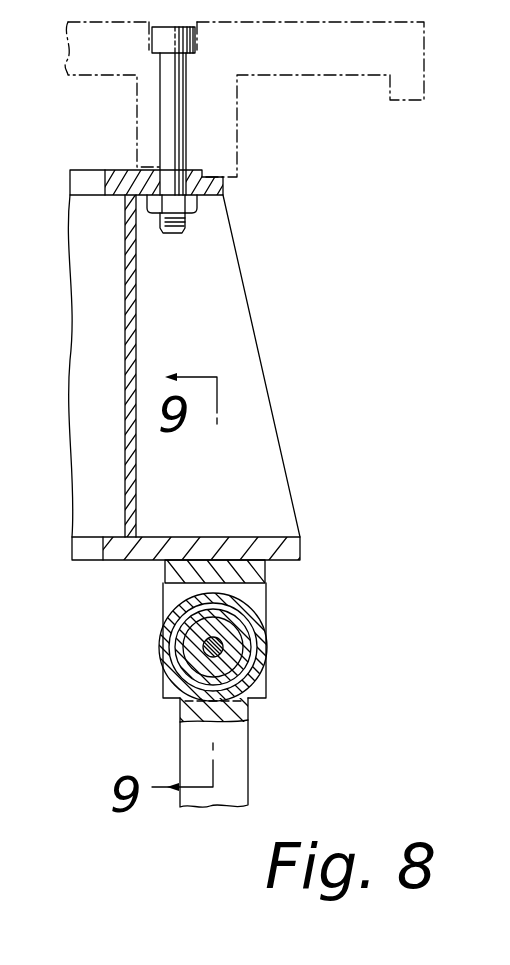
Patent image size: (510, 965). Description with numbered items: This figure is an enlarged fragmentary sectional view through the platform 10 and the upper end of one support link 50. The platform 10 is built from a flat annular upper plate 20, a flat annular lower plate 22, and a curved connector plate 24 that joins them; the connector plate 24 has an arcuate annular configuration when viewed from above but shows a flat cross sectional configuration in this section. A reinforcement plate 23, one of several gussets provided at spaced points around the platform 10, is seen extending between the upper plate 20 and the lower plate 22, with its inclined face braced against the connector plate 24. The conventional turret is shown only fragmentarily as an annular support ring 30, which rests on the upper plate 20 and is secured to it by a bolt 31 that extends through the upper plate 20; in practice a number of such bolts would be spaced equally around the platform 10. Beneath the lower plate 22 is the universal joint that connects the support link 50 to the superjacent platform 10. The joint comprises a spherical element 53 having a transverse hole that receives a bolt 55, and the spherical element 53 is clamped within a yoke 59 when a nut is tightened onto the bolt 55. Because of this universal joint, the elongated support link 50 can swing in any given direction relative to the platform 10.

The platform 10 is at (250, 278).
The upper plate 20 is at (122, 178).
The lower plate 22 is at (283, 545).
The reinforcement plate 23 is at (235, 333).
The connector plate 24 is at (130, 337).
The support ring 30 is at (223, 132).
The bolt 31 is at (164, 117).
The support link 50 is at (238, 780).
The spherical element 53 is at (193, 635).
The bolt 55 is at (223, 648).
The yoke 59 is at (255, 573).